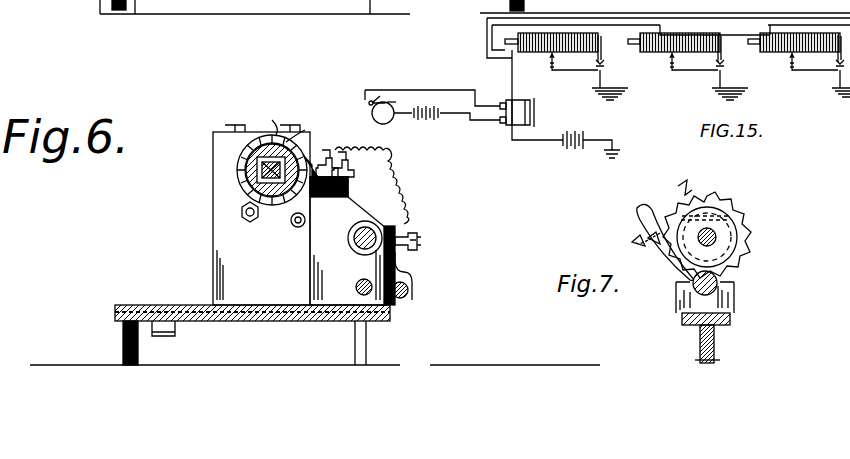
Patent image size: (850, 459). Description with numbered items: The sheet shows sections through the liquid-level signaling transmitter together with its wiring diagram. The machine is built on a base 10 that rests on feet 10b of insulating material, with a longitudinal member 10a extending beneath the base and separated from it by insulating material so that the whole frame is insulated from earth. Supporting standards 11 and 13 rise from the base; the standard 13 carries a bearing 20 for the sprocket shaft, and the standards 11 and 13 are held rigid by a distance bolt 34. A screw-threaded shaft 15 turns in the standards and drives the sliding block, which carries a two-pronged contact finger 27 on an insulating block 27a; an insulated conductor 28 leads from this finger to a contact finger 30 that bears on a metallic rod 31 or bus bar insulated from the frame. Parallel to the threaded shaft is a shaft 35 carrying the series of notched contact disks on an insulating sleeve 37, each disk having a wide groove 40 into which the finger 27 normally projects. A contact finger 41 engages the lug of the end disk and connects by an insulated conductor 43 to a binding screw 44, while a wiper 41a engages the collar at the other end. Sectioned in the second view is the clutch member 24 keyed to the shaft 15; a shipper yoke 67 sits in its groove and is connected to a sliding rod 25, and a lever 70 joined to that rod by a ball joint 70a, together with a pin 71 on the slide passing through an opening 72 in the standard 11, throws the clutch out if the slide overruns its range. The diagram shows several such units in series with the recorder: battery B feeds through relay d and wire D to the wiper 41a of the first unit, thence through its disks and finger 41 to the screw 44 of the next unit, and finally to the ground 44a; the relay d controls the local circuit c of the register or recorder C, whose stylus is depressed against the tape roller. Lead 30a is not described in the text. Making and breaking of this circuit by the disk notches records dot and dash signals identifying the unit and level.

In FIG. 6, the base 10 is at (178, 306).
In FIG. 7, the base 10 is at (695, 178).
In FIG. 6, the longitudinal member 10a is at (367, 348).
In FIG. 7, the longitudinal member 10a is at (714, 345).
In FIG. 6, the feet 10b is at (125, 342).
In FIG. 6, the supporting standard 11 is at (213, 222).
In FIG. 7, the supporting standard 13 is at (718, 295).
In FIG. 6, the shaft 15 is at (352, 230).
In FIG. 7, the shaft 15 is at (716, 235).
In FIG. 6, the bearing 20 is at (322, 258).
In FIG. 7, the clutch member 24 is at (720, 215).
In FIG. 6, the sliding rod 25 is at (358, 280).
In FIG. 7, the sliding rod 25 is at (730, 311).
In FIG. 6, the contact finger 27 is at (320, 152).
In FIG. 15, the contact finger 27 is at (672, 62).
In FIG. 6, the insulating block 27a is at (333, 166).
In FIG. 6, the insulated conductor 28 is at (372, 157).
In FIG. 6, the contact finger 30 is at (402, 262).
In FIG. 15, the contact finger 30 is at (548, 53).
In FIG. 6, the lead wire 30a is at (272, 125).
In FIG. 6, the metallic rod 31 is at (403, 292).
In FIG. 15, the metallic rod 31 is at (652, 70).
In FIG. 6, the distance bolt 34 is at (240, 210).
In FIG. 6, the shaft 35 is at (245, 166).
In FIG. 6, the insulating sleeve 37 is at (255, 158).
In FIG. 6, the groove 40 is at (296, 135).
In FIG. 15, the contact finger 41 is at (601, 46).
In FIG. 15, the wiper 41a is at (768, 30).
In FIG. 15, the insulated conductor 43 is at (603, 63).
In FIG. 15, the binding screw 44 is at (718, 80).
In FIG. 15, the ground 44a is at (624, 96).
In FIG. 7, the shipper yoke 67 is at (738, 245).
In FIG. 7, the lever 70 is at (637, 215).
In FIG. 7, the ball joint 70a is at (680, 296).
In FIG. 6, the pin 71 is at (290, 224).
In FIG. 6, the opening 72 is at (348, 238).
In FIG. 6, the local circuit c is at (421, 90).
In FIG. 6, the register or recorder C is at (392, 117).
In FIG. 6, the relay d is at (532, 105).
In FIG. 6, the wire D is at (513, 88).
In FIG. 6, the battery B is at (568, 134).